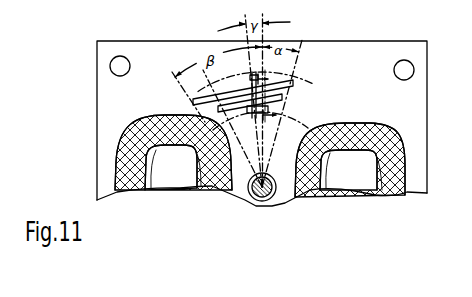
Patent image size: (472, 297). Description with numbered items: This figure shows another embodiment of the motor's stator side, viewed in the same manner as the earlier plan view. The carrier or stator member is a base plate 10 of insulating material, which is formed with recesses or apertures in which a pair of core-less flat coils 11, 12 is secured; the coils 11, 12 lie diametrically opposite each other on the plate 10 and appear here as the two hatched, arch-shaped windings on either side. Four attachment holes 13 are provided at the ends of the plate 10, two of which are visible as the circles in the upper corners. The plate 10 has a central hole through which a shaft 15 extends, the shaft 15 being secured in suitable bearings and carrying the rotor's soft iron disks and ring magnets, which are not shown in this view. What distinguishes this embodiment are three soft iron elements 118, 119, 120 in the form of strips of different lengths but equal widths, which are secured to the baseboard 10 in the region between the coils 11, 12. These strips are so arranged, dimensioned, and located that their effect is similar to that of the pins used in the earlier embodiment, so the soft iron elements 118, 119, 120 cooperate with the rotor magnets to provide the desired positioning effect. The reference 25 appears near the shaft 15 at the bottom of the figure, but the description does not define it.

The base plate 10 is at (370, 58).
The core-less flat coil 11 is at (122, 152).
The core-less flat coil 12 is at (407, 144).
The attachment hole 13 is at (413, 68).
The shaft 15 is at (239, 208).
The pivot axis of rotation 25 is at (253, 219).
The soft iron element 118 is at (293, 85).
The soft iron element 119 is at (294, 99).
The soft iron element 120 is at (350, 122).